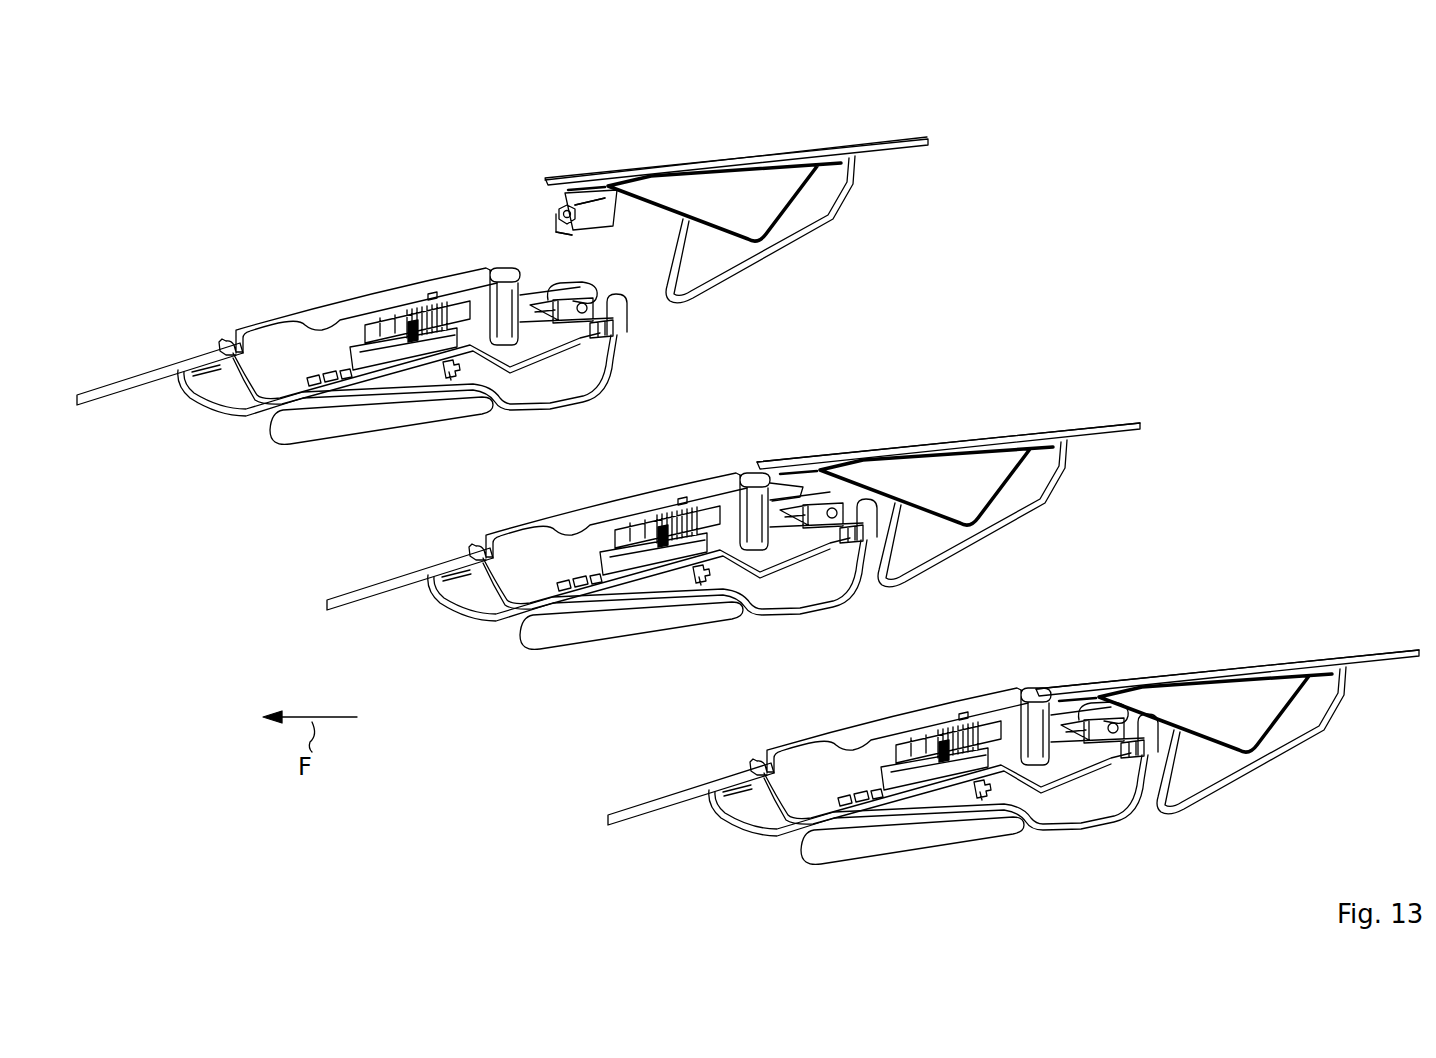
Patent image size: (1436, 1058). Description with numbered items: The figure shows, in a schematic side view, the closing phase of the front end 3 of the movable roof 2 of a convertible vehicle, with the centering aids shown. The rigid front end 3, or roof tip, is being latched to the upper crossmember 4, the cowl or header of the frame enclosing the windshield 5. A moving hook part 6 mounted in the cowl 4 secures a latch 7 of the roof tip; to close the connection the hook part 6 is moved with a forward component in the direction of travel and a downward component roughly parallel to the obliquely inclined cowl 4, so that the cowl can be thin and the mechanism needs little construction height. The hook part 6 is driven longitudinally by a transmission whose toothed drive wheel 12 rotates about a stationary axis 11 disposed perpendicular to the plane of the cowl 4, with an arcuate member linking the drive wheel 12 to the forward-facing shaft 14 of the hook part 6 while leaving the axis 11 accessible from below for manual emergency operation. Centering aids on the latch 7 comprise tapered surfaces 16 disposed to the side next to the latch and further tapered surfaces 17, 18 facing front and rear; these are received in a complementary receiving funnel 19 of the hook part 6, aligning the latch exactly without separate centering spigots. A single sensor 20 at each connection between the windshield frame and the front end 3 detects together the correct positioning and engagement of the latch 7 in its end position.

The movable roof 2 is at (858, 139).
The front end of the roof 3 is at (649, 148).
The upper crossmember 4 is at (320, 326).
The windshield 5 is at (157, 368).
The hook part 6 is at (590, 292).
The latch 7 is at (572, 212).
The axis 11 is at (452, 364).
The drive wheel 12 is at (440, 315).
The shaft 14 is at (418, 340).
The tapered surfaces 16 is at (563, 240).
The tapered surface 17 is at (560, 212).
The tapered surface 18 is at (580, 196).
The receiving funnel 19 is at (537, 282).
The sensor 20 is at (572, 322).